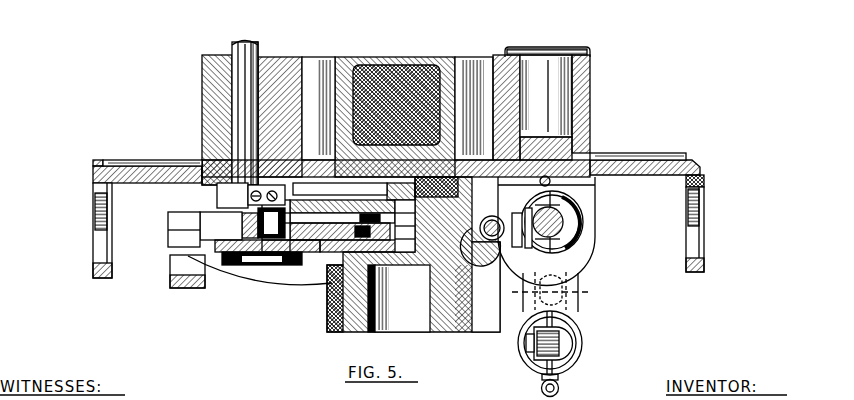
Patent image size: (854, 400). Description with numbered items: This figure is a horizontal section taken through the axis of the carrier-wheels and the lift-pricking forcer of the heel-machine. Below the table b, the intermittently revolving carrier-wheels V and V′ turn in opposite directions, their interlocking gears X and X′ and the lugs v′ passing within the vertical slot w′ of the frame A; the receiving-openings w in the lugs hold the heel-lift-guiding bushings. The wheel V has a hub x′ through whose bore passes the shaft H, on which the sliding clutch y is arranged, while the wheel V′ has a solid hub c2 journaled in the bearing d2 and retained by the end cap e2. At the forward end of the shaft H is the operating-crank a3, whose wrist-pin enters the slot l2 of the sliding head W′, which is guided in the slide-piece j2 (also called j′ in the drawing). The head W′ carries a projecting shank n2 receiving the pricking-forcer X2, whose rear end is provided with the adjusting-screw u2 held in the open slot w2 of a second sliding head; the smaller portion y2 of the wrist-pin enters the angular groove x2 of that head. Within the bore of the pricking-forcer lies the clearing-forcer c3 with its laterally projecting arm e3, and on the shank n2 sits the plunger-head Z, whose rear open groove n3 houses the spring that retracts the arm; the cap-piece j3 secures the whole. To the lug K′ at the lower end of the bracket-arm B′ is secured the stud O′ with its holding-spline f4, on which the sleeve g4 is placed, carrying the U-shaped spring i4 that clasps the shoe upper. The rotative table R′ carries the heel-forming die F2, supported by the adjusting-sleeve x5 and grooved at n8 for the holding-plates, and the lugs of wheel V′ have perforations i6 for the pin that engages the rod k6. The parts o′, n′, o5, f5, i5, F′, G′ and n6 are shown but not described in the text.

The shaft H is at (247, 42).
The slide-piece j′ is at (207, 92).
The hub x′ is at (226, 120).
The operating-crank a3 is at (210, 162).
The frame A is at (395, 62).
The carrier-wheel V is at (146, 166).
The interlocking gear X is at (92, 170).
The carrier-wheel V′ is at (632, 163).
The interlocking gear X′ is at (702, 166).
The receiving-opening w is at (96, 238).
The lug v′ is at (100, 279).
The end cap or disk e2 is at (552, 44).
The solid hub c2 is at (546, 96).
The bearing d2 is at (588, 102).
The downwardly-extending rod k6 is at (590, 153).
The perforation i6 is at (705, 183).
The laterally-projecting arm e3 is at (232, 195).
The projecting shank n2 is at (340, 189).
The strip o′ is at (333, 189).
The strip n′ is at (355, 189).
The table b is at (375, 189).
The open groove n3 is at (306, 160).
The pin o5 is at (310, 168).
The pin f5 is at (322, 166).
The pin i5 is at (360, 158).
The clearing-forcer c3 is at (422, 188).
The bracket-arm B′ is at (470, 205).
The downwardly-projecting stud O′ is at (492, 216).
The inwardly-projecting lug K′ is at (490, 242).
The vertical slot w′ is at (402, 298).
The sliding head W′ is at (222, 222).
The smaller end portion of wrist-pin y2 is at (184, 229).
The sliding clutch y is at (182, 240).
The open slot w2 is at (187, 271).
The slide-piece j2 is at (170, 226).
The cap-piece j3 is at (268, 266).
The slot l2 is at (240, 266).
The adjusting-screw u2 is at (228, 268).
The angular groove x2 is at (250, 268).
The pricking-forcer X2 is at (260, 276).
The plunger-head Z is at (318, 258).
The disc housing F′ is at (537, 212).
The disc G′ is at (594, 223).
The U-shaped spring i4 is at (533, 207).
The rotative table R′ is at (570, 303).
The heel-forming die F2 is at (526, 343).
The vertical grooves n8 is at (547, 318).
The ring part n6 is at (527, 333).
The adjusting-sleeve x5 is at (579, 341).
The sleeve g4 is at (541, 390).
The holding-spline f4 is at (560, 390).